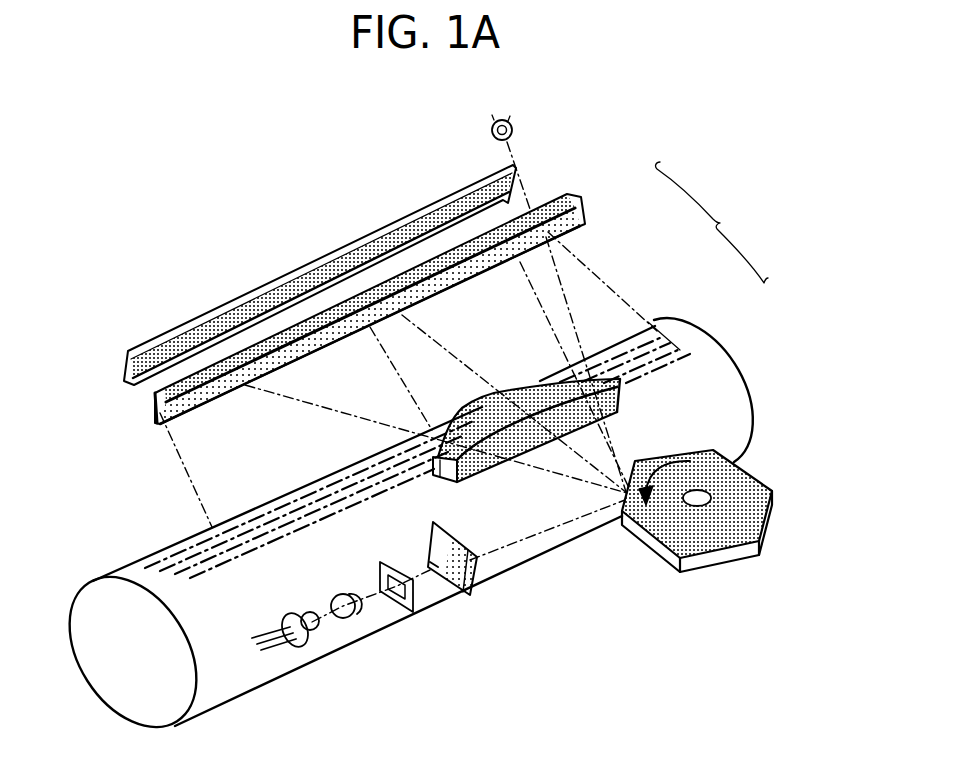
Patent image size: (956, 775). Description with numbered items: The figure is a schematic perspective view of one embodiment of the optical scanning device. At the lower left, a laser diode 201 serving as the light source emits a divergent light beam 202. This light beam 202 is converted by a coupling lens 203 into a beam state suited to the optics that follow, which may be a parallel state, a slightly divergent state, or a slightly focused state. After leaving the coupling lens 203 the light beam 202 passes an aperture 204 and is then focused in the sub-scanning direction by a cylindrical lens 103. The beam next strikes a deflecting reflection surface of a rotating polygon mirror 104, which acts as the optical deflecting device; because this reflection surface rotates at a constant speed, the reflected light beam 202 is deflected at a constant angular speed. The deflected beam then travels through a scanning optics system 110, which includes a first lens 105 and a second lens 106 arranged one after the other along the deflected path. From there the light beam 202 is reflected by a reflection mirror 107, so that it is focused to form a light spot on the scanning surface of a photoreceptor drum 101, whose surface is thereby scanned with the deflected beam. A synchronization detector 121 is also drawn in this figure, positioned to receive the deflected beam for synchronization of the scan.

The photoreceptor drum 101 is at (88, 603).
The cylindrical lens 103 is at (477, 578).
The polygon mirror 104 is at (760, 477).
The first lens 105 is at (630, 383).
The second lens 106 is at (567, 194).
The reflection mirror 107 is at (425, 205).
The scanning optics system 110 is at (712, 222).
The synchronization detector 121 is at (512, 127).
The laser diode 201 is at (300, 647).
The light beam 202 is at (330, 612).
The coupling lens 203 is at (355, 621).
The aperture 204 is at (413, 598).